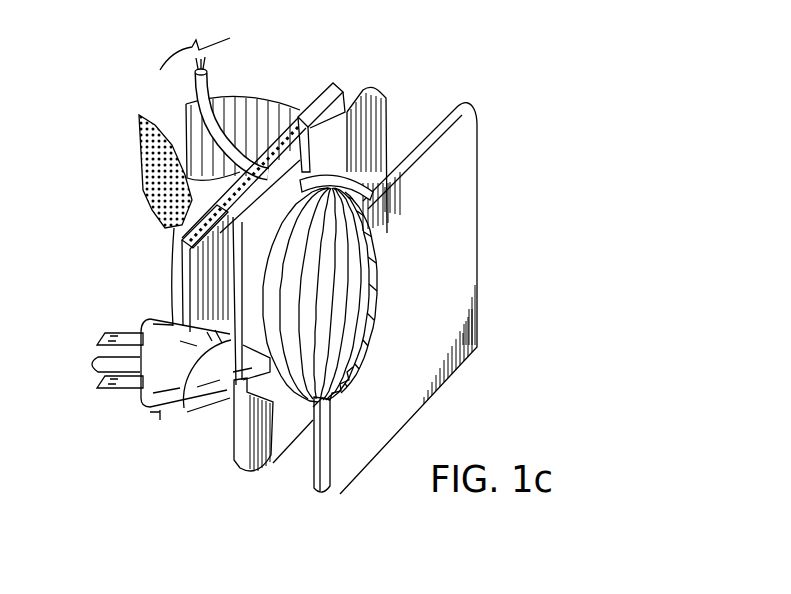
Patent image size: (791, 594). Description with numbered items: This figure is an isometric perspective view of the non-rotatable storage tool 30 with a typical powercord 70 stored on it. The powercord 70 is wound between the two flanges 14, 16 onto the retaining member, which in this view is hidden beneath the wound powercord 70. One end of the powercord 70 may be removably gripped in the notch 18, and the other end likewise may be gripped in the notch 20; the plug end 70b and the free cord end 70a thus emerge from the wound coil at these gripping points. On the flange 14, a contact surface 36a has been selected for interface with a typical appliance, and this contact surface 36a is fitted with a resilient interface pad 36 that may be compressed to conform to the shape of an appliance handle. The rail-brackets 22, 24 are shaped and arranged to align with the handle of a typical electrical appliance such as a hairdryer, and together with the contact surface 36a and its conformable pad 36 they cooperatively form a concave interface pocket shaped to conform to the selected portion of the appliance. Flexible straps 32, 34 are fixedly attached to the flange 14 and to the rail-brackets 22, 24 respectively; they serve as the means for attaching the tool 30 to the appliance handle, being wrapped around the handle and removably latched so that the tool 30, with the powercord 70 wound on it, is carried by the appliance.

The flange 14 is at (233, 457).
The flange 16 is at (315, 473).
The notch 18 is at (278, 185).
The notch 20 is at (215, 366).
The rail-bracket 22 is at (170, 238).
The rail-bracket 24 is at (335, 83).
The storage tool 30 is at (497, 225).
The flexible strap 32 is at (140, 137).
The flexible strap 34 is at (185, 105).
The resilient interface pad 36 is at (250, 176).
The contact surface 36a is at (280, 152).
The powercord 70 is at (345, 325).
The power cord 70a is at (212, 76).
The plug prongs 70b is at (160, 407).